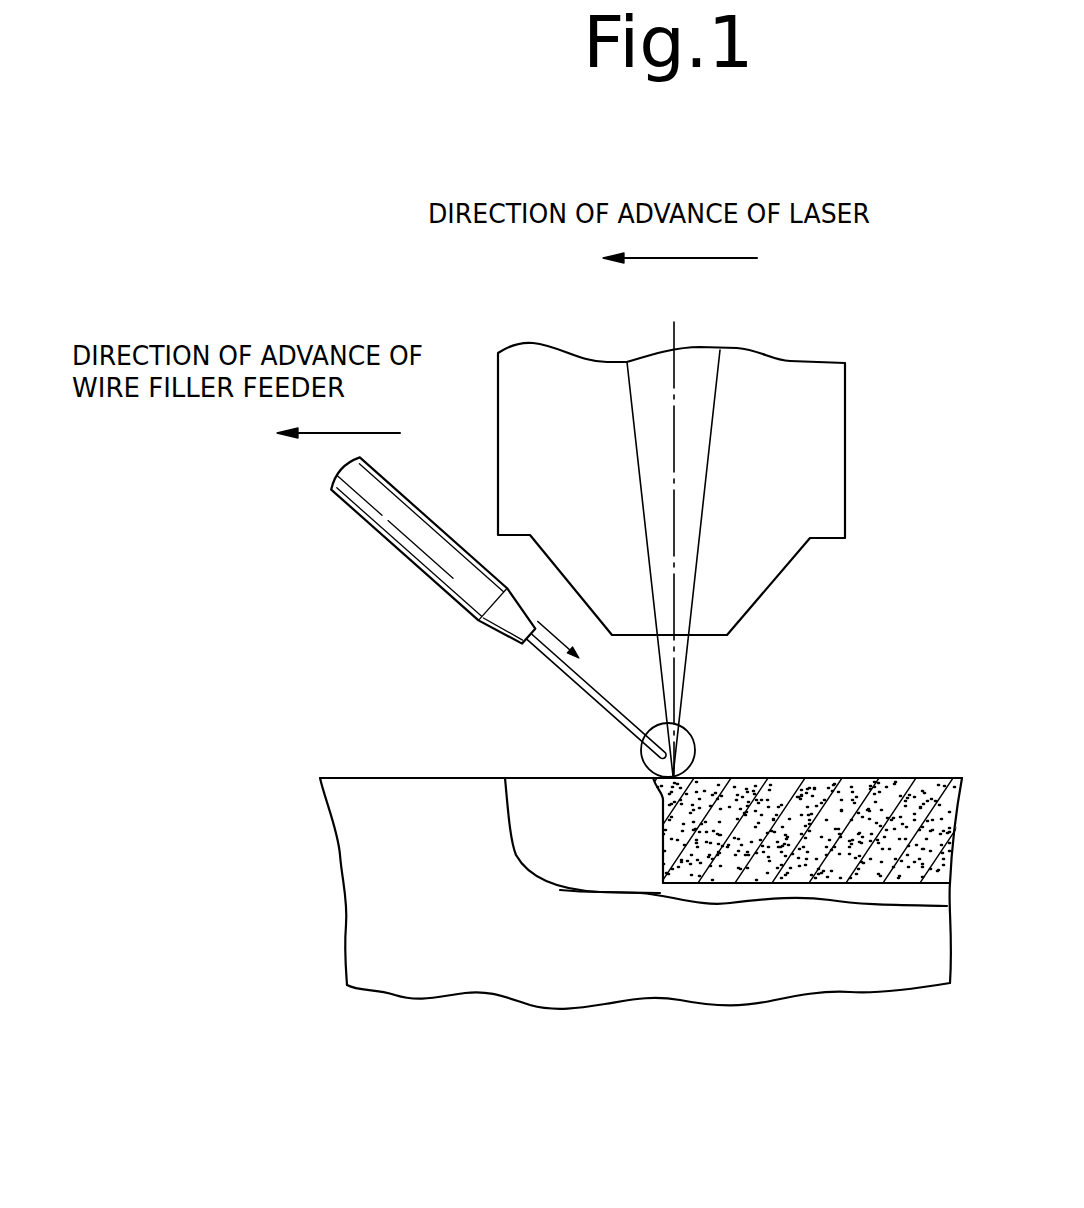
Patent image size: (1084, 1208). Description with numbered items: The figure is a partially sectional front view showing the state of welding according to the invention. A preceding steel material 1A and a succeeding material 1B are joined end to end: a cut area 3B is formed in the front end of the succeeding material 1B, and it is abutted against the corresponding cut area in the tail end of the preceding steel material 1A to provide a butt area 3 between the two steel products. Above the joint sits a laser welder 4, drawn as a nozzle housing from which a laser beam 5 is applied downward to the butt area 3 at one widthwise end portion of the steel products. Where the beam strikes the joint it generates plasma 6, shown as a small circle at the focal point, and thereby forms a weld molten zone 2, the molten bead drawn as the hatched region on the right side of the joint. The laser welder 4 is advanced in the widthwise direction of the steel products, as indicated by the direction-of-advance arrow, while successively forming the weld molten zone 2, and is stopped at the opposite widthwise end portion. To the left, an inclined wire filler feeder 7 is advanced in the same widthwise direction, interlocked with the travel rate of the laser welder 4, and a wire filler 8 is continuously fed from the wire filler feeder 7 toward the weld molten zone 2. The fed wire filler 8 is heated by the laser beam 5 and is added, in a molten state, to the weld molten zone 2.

The preceding steel material 1A is at (445, 871).
The succeeding material 1B is at (537, 776).
The weld molten zone 2 is at (902, 778).
The butt area 3 is at (390, 768).
The cut area 3B is at (594, 814).
The laser welder 4 is at (833, 469).
The laser beam 5 is at (688, 657).
The plasma 6 is at (695, 754).
The wire filler feeder 7 is at (428, 576).
The wire filler 8 is at (561, 669).